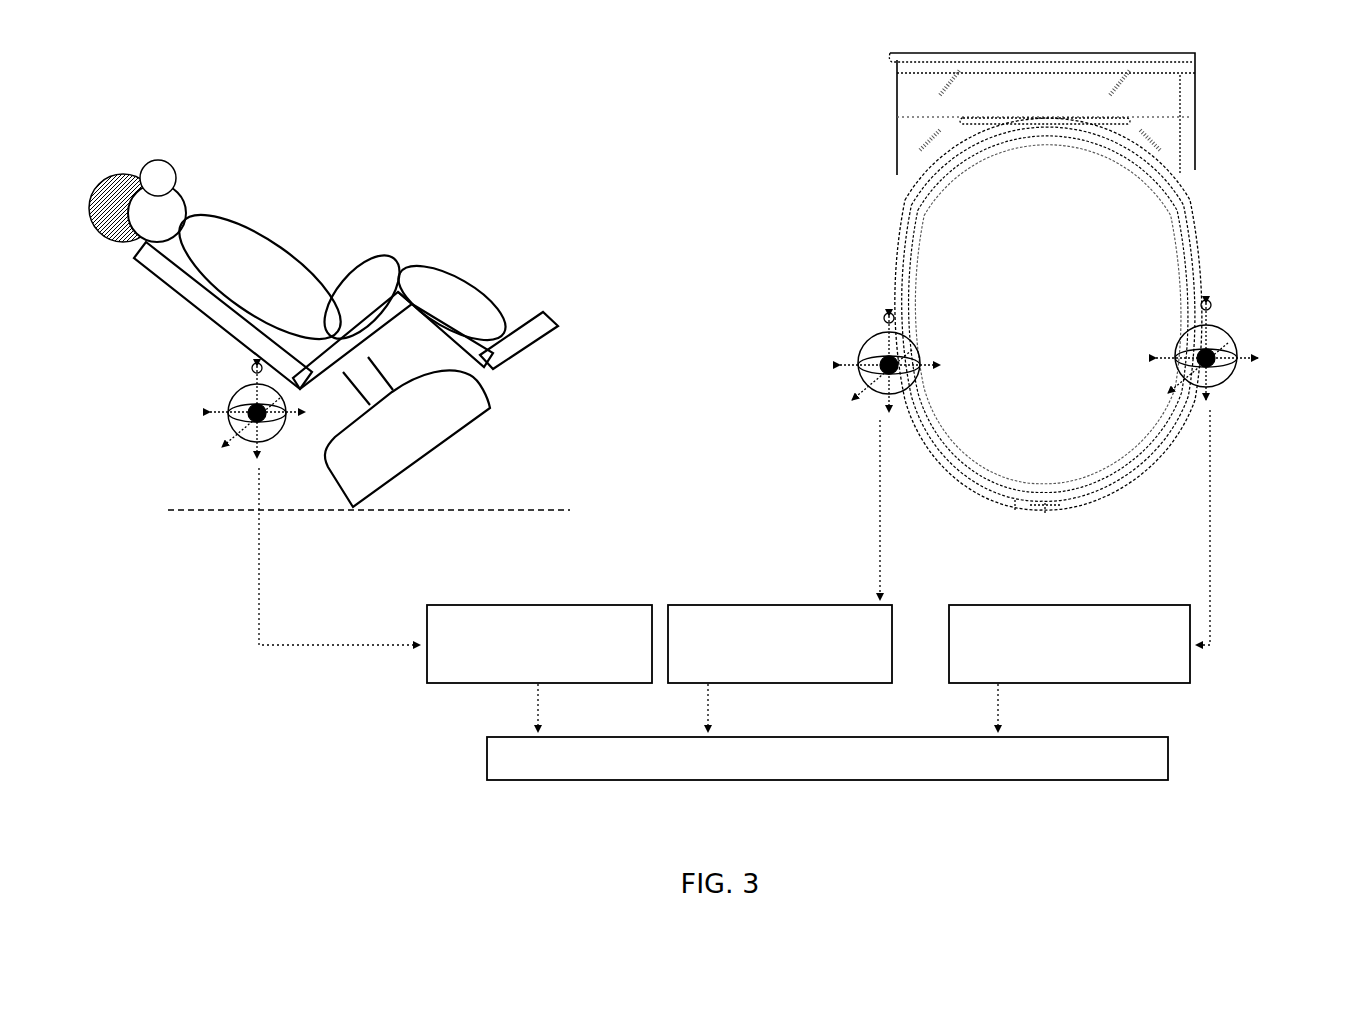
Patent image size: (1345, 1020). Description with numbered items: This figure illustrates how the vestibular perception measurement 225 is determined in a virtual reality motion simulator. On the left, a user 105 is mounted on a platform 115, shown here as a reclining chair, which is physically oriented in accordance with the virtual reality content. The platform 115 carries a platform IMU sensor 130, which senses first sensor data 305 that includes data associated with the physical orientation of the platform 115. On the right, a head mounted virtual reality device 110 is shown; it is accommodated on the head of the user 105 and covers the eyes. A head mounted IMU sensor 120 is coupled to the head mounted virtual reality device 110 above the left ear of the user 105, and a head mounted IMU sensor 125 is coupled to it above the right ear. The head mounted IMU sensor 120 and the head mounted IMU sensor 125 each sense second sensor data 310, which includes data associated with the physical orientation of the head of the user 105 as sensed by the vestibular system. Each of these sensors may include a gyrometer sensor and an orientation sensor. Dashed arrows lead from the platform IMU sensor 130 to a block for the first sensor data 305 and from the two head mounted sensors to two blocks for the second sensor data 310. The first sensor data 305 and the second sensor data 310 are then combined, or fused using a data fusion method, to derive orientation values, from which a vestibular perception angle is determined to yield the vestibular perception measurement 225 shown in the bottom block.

The user 105 is at (268, 237).
The head mounted virtual reality device 110 is at (1180, 130).
The platform 115 is at (170, 308).
The head mounted IMU sensor 120 is at (855, 357).
The head mounted IMU sensor 125 is at (1240, 341).
The platform IMU sensor 130 is at (235, 383).
The first sensor data 305 is at (592, 606).
The second sensor data 310 is at (735, 606).
The vestibular perception measurement 225 is at (886, 737).